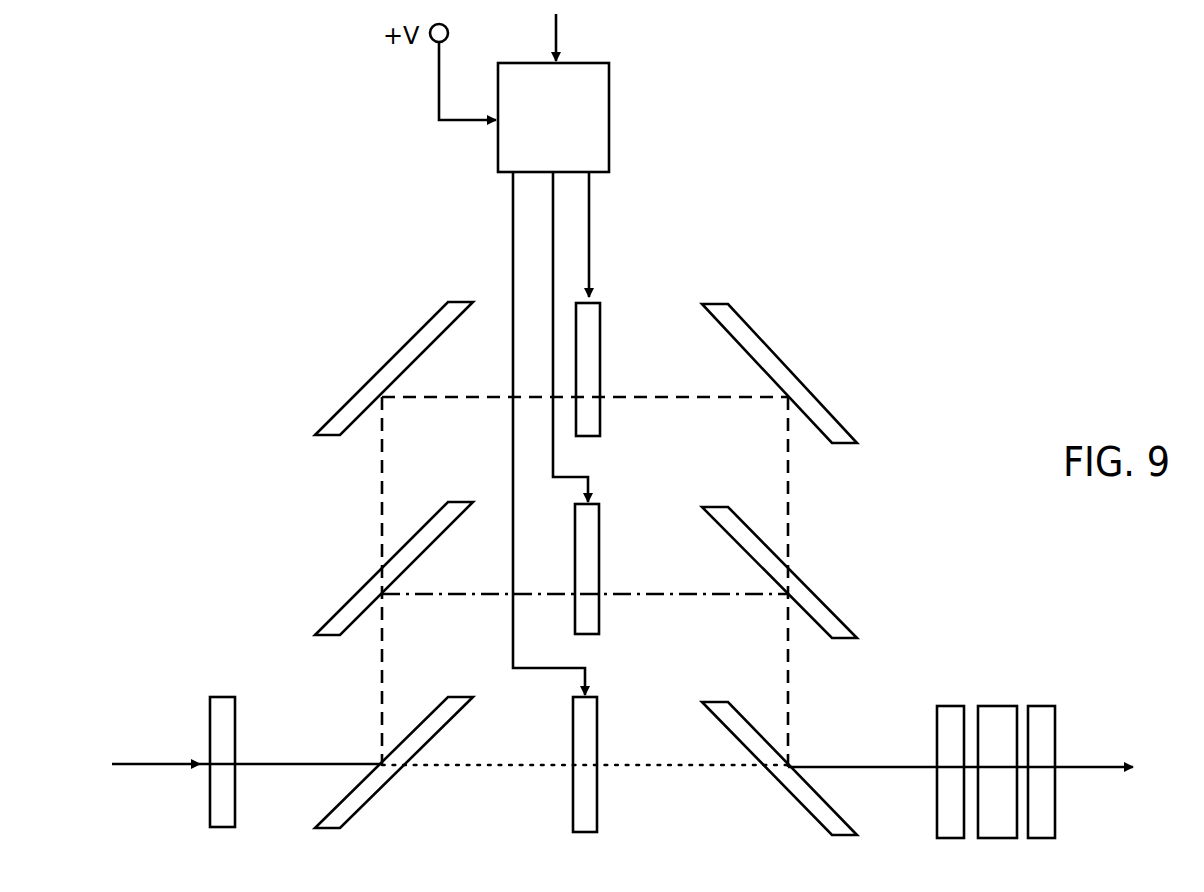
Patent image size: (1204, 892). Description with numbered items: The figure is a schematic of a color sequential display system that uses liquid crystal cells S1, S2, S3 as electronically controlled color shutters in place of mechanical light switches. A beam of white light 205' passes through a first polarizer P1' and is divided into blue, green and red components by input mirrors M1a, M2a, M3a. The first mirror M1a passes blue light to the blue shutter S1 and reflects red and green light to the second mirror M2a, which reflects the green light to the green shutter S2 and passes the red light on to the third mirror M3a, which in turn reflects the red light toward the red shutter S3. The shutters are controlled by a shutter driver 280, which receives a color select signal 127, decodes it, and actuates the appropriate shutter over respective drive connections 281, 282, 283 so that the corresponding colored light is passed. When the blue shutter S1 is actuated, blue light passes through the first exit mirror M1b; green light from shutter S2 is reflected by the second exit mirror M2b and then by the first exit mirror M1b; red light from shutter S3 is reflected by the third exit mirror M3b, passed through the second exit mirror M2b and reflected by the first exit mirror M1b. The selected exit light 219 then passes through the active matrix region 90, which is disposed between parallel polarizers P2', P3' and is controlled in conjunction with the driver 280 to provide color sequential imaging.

The color select signal 127 is at (557, 34).
The shutter driver 280 is at (553, 117).
The shutter drive line to S1 281 is at (513, 211).
The shutter drive line to S2 282 is at (553, 236).
The shutter drive line to S3 283 is at (591, 203).
The blue shutter S1 is at (597, 812).
The green shutter S2 is at (599, 610).
The red shutter S3 is at (600, 412).
The first mirror M1a is at (378, 793).
The second mirror M2a is at (329, 628).
The third mirror M3a is at (327, 424).
The first exit mirror M1b is at (813, 820).
The second exit mirror M2b is at (836, 612).
The third exit mirror M3b is at (836, 412).
The first polarizer P1' is at (196, 763).
The polarizer P2' is at (922, 774).
The polarizer P3' is at (1071, 776).
The active matrix region 90 is at (988, 706).
The beam of white light 205' is at (247, 735).
The selected exit light 219 is at (864, 767).